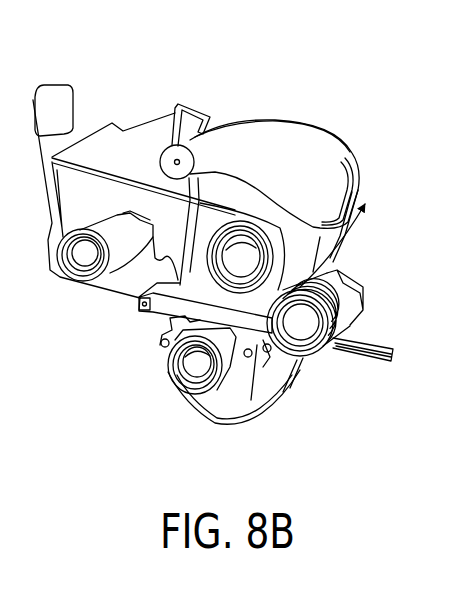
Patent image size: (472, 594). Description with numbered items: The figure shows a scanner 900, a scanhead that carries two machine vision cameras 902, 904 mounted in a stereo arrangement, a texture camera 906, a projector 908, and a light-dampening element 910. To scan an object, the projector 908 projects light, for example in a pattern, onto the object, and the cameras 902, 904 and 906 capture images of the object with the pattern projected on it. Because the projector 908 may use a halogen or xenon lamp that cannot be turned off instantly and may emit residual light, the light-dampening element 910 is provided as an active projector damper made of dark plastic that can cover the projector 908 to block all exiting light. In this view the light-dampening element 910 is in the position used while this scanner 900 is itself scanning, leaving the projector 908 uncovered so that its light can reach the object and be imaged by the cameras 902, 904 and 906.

The scanner 900 is at (120, 90).
The machine vision camera 902 is at (82, 286).
The machine vision camera 904 is at (326, 359).
The texture camera 906 is at (164, 379).
The projector 908 is at (286, 270).
The light-dampening element 910 is at (355, 153).